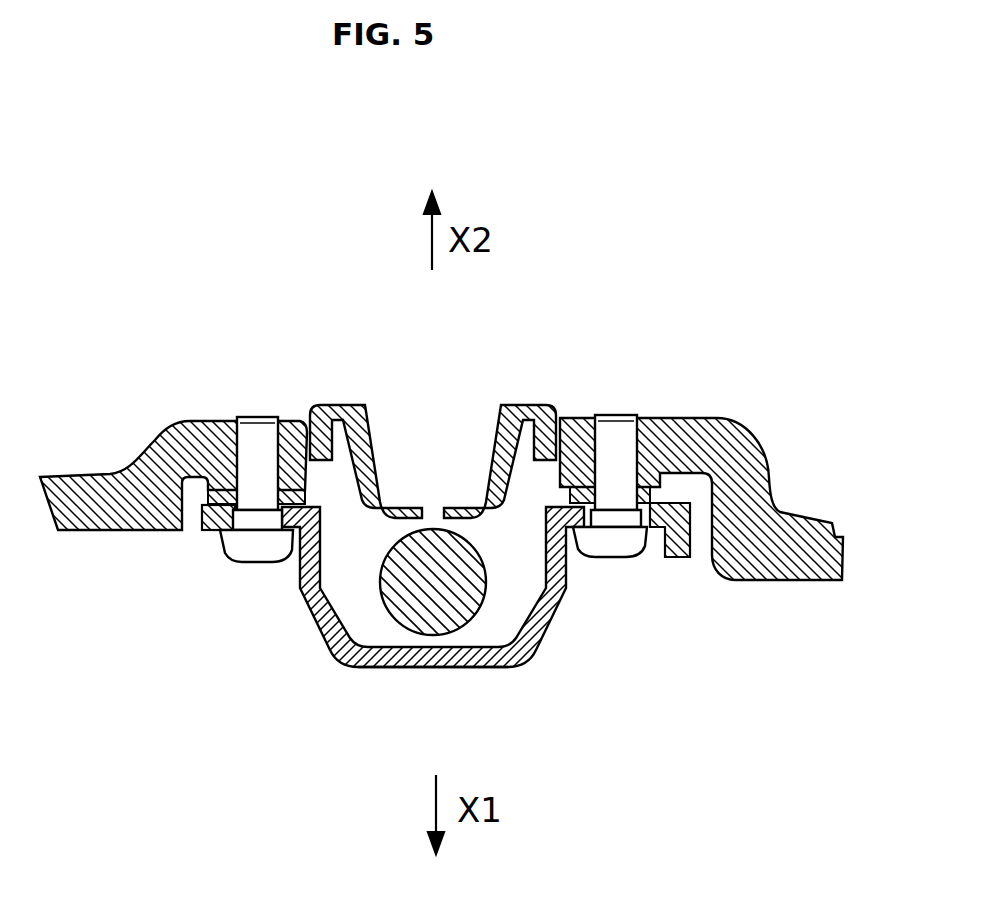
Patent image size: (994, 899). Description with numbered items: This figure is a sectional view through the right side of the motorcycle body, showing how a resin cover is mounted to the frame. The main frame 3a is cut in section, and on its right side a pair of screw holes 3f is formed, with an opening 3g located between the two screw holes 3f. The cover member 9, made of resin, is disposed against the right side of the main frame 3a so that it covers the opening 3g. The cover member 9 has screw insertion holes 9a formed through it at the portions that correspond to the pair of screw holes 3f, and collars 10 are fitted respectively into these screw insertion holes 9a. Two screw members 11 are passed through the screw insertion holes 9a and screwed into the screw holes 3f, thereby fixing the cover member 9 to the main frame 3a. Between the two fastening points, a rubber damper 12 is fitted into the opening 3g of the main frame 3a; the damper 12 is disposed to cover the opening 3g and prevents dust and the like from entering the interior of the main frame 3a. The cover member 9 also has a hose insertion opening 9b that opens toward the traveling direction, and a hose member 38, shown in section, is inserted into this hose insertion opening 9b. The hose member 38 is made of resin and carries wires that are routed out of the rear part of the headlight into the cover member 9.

The main frame 3a is at (733, 480).
The screw holes 3f is at (248, 457).
The opening 3g is at (522, 408).
The cover member 9 is at (528, 633).
The screw insertion holes 9a is at (216, 533).
The hose insertion opening 9b is at (377, 660).
The collars 10 is at (218, 491).
The screw members 11 is at (258, 548).
The rubber damper 12 is at (347, 405).
The hose member 38 is at (453, 593).